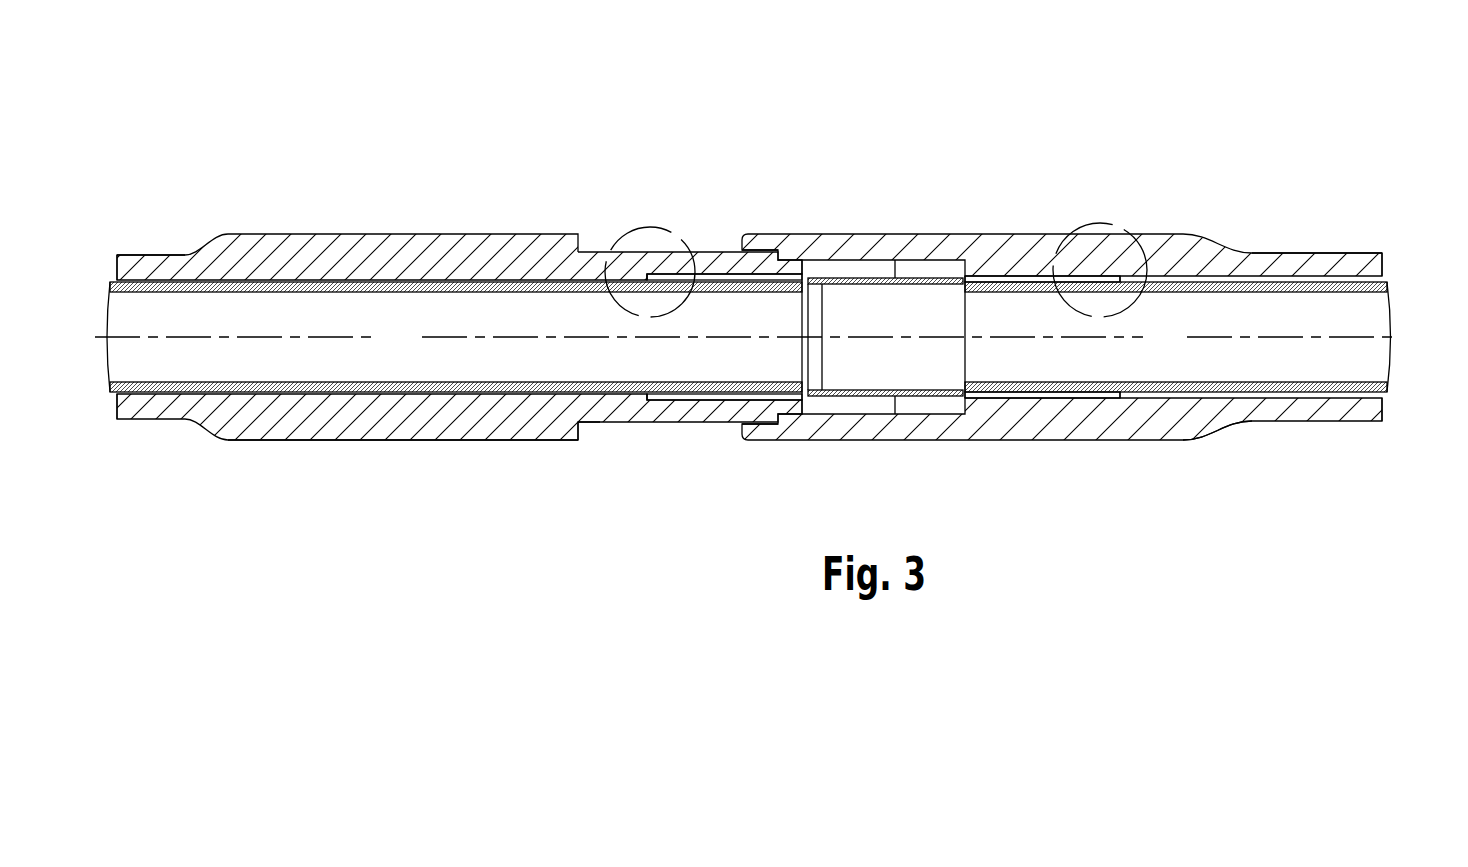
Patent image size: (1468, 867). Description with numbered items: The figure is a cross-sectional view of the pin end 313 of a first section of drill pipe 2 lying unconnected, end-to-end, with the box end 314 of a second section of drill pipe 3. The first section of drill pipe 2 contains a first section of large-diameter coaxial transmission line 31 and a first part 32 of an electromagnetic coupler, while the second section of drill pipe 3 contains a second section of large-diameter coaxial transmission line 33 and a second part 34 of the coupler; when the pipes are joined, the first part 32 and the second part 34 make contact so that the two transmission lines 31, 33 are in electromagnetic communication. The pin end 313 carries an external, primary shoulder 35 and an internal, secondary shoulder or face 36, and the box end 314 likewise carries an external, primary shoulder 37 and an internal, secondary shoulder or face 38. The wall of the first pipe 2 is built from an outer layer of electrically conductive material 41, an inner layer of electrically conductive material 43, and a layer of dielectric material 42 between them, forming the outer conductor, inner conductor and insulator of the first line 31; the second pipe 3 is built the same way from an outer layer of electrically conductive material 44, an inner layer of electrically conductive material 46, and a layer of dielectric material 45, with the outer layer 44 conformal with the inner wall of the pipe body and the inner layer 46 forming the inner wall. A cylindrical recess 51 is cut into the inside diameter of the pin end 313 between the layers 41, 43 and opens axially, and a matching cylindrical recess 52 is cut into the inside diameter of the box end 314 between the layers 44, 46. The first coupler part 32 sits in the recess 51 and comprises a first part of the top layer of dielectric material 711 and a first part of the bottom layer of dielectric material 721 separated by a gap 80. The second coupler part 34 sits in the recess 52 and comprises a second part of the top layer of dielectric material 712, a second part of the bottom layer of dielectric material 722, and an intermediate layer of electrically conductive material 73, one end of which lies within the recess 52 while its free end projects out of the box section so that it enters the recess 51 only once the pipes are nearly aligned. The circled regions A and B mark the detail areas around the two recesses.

The first section of large-diameter coaxial transmission line 31 is at (115, 86).
The first part of electromagnetic coupler 32 is at (648, 86).
The second section of large-diameter coaxial transmission line 33 is at (1122, 86).
The second part of electromagnetic coupler 34 is at (810, 86).
The external primary shoulder 35 is at (580, 426).
The internal secondary shoulder or face 36 is at (804, 357).
The external primary shoulder 37 is at (742, 424).
The internal secondary shoulder or face 38 is at (964, 362).
The outer layer of electrically conductive material 41 is at (175, 278).
The layer of dielectric material 42 is at (128, 280).
The inner layer of electrically conductive material 43 is at (168, 288).
The outer layer of electrically conductive material 44 is at (1318, 276).
The layer of dielectric material 45 is at (1368, 277).
The inner layer of electrically conductive material 46 is at (1348, 291).
The cylindrical recess 51 is at (648, 252).
The cylindrical recess 52 is at (1115, 275).
The intermediate layer of electrically conductive material 73 is at (940, 284).
The gap 80 is at (811, 268).
The pin end 313 is at (404, 412).
The box end 314 is at (1168, 420).
The first part of the top layer of dielectric material 711 is at (733, 253).
The second part of the top layer of dielectric material 712 is at (1028, 275).
The first part of the bottom layer of dielectric material 721 is at (716, 292).
The second part of the bottom layer of dielectric material 722 is at (1050, 293).
The first section of drill pipe 2 is at (400, 338).
The second section of drill pipe 3 is at (1165, 338).
The detail region A is at (662, 230).
The detail region B is at (1090, 222).